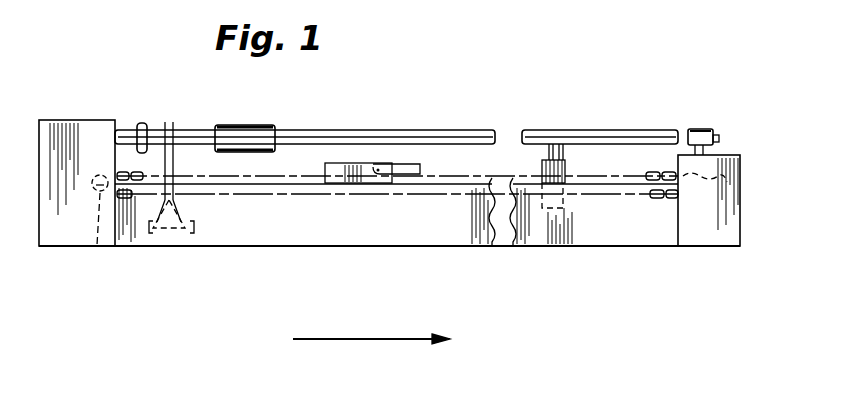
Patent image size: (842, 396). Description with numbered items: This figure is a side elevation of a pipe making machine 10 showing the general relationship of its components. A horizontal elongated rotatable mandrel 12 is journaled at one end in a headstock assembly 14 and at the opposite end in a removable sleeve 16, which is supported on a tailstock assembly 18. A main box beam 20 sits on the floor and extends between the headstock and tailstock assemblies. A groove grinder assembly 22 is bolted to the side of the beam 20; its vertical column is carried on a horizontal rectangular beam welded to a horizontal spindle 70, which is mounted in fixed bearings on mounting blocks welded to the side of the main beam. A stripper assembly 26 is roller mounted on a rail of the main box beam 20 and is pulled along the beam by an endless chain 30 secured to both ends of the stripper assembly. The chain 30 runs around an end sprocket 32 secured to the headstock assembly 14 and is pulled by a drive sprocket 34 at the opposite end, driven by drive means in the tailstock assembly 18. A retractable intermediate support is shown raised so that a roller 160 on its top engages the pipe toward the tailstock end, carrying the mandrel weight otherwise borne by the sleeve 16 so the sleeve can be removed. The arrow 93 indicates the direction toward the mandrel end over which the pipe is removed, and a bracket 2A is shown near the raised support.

The apparatus 10 is at (492, 89).
The mandrel 12 is at (385, 132).
The headstock assembly 14 is at (55, 246).
The removable sleeve 16 is at (700, 128).
The tailstock assembly 18 is at (713, 238).
The main box beam 20 is at (573, 238).
The groove grinder assembly 22 is at (197, 235).
The stripper assembly 26 is at (342, 163).
The endless chain 30 is at (610, 196).
The end sprocket 32 is at (98, 255).
The drive sprocket 34 is at (747, 161).
The horizontal spindle 70 is at (232, 127).
The arrow 93 is at (353, 340).
The roller 160 is at (547, 149).
The bracket 2A is at (565, 158).